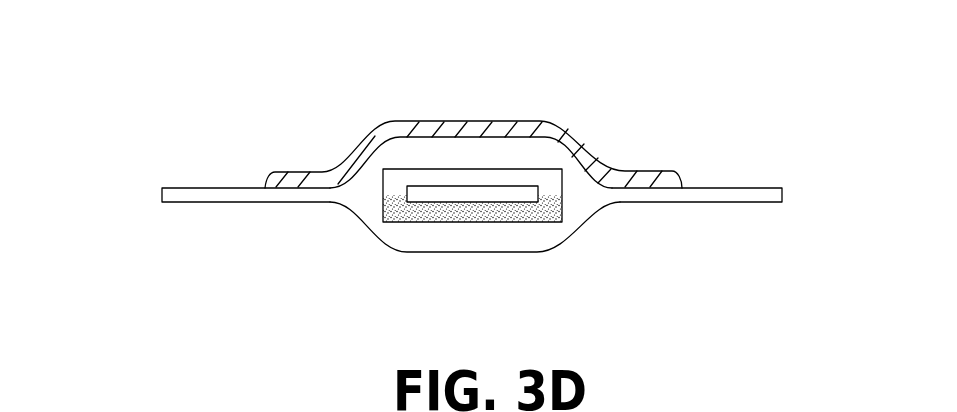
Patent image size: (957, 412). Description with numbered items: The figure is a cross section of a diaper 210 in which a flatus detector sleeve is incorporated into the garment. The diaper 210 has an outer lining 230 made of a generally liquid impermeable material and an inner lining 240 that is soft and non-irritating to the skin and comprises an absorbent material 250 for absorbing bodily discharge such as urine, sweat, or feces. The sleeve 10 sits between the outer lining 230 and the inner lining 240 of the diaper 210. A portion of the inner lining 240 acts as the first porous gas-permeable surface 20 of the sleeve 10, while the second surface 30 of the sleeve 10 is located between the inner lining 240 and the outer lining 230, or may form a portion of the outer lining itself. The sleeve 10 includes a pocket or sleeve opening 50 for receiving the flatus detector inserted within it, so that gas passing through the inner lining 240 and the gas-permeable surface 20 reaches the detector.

The diaper 210 is at (452, 166).
The absorbent material 250 is at (597, 150).
The inner lining 240 is at (707, 187).
The outer lining 230 is at (693, 202).
The first porous gas-permeable surface 20 is at (483, 175).
The sleeve 10 is at (537, 175).
The pocket or sleeve opening 50 is at (443, 193).
The second surface 30 is at (543, 205).